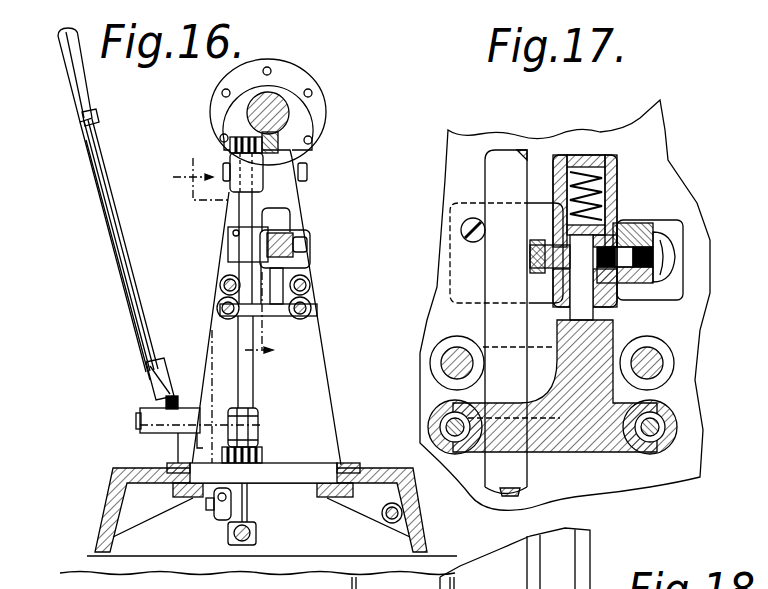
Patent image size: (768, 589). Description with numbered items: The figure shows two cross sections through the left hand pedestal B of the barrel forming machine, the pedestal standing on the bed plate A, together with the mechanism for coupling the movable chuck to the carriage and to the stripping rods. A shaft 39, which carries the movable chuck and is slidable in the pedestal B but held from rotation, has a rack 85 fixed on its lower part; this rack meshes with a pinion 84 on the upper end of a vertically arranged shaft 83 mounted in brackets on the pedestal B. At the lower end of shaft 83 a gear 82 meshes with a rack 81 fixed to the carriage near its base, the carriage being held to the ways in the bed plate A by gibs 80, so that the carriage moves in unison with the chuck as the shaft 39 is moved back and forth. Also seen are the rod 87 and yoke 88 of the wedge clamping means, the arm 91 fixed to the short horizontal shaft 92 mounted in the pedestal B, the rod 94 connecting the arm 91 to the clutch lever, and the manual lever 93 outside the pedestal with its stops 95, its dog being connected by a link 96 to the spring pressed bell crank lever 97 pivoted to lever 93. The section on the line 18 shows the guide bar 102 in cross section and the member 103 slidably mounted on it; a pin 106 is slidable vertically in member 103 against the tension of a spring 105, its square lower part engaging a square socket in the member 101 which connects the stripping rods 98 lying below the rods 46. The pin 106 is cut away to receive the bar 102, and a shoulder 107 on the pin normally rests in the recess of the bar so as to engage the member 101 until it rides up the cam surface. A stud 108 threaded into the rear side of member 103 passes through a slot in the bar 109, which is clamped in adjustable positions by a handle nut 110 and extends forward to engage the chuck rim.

In FIG. 16, the bell crank lever 97 is at (72, 68).
In FIG. 16, the link 96 is at (105, 193).
In FIG. 16, the lever 93 is at (122, 266).
In FIG. 16, the rod 94 is at (153, 378).
In FIG. 16, the stops 95 is at (170, 397).
In FIG. 16, the short horizontal shaft 92 is at (140, 418).
In FIG. 16, the section line 18 is at (225, 266).
In FIG. 16, the pedestal B is at (318, 353).
In FIG. 17, the pedestal B is at (660, 166).
In FIG. 16, the shaft 39 is at (278, 112).
In FIG. 16, the rack 85 is at (282, 150).
In FIG. 16, the pinion 84 is at (230, 148).
In FIG. 16, the vertically arranged shaft 83 is at (247, 215).
In FIG. 17, the vertically arranged shaft 83 is at (498, 181).
In FIG. 16, the member 103 is at (278, 215).
In FIG. 17, the member 103 is at (633, 201).
In FIG. 16, the bar 109 is at (307, 227).
In FIG. 17, the bar 109 is at (623, 284).
In FIG. 16, the handle nut 110 is at (308, 250).
In FIG. 17, the handle nut 110 is at (685, 265).
In FIG. 16, the guide bar 102 is at (260, 248).
In FIG. 17, the guide bar 102 is at (553, 281).
In FIG. 16, the member 101 is at (273, 318).
In FIG. 17, the member 101 is at (580, 450).
In FIG. 16, the rods 46 is at (222, 283).
In FIG. 17, the rods 46 is at (438, 363).
In FIG. 16, the rods 98 is at (222, 313).
In FIG. 17, the rods 98 is at (430, 426).
In FIG. 16, the bed plate A is at (113, 489).
In FIG. 16, the gibs 80 is at (348, 466).
In FIG. 16, the gear 82 is at (192, 452).
In FIG. 16, the rack 81 is at (276, 453).
In FIG. 16, the rod 87 is at (233, 495).
In FIG. 16, the yoke 88 is at (216, 521).
In FIG. 16, the arm 91 is at (248, 510).
In FIG. 17, the spring 105 is at (618, 190).
In FIG. 17, the pin 106 is at (598, 311).
In FIG. 17, the shoulder 107 is at (537, 260).
In FIG. 17, the stud 108 is at (640, 224).